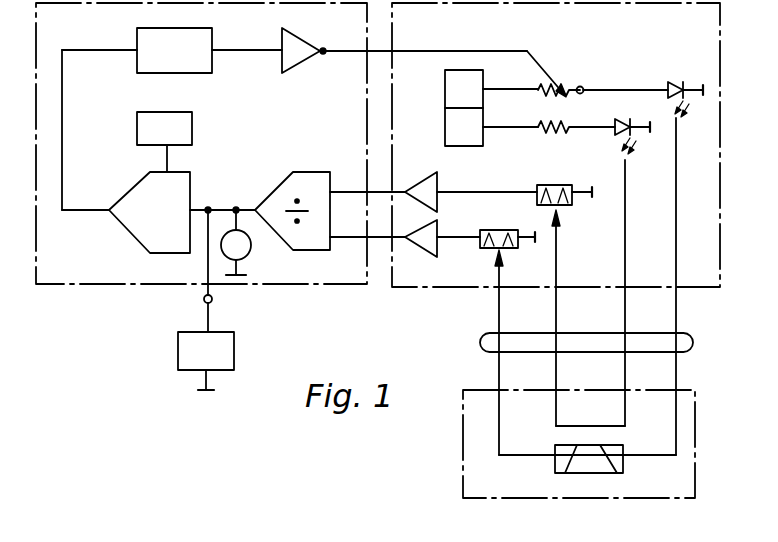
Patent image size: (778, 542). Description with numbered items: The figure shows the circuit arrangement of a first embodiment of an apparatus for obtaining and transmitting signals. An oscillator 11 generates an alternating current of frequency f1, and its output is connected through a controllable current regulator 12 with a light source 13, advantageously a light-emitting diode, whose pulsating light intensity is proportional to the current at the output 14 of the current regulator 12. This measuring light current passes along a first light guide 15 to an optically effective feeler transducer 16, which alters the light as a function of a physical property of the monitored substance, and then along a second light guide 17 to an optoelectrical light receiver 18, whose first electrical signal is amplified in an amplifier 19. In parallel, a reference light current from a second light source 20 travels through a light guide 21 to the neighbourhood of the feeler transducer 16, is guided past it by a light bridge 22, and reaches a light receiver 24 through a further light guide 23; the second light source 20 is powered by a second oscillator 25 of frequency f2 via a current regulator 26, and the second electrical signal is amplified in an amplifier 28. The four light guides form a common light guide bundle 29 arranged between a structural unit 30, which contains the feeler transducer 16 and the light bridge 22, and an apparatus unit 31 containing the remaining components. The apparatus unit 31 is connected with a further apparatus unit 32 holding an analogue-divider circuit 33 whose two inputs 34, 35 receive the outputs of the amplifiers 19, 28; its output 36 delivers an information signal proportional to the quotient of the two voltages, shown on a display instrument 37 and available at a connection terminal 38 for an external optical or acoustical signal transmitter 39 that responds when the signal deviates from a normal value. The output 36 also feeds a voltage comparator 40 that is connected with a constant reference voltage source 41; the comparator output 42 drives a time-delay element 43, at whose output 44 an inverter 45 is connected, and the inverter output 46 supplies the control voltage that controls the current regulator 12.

The oscillator 11 is at (445, 91).
The controllable current regulator 12 is at (563, 80).
The light source 13 is at (676, 80).
The output of the current regulator 14 is at (584, 88).
The first light guide 15 is at (678, 315).
The feeler transducer 16 is at (623, 468).
The second light guide 17 is at (497, 310).
The light receiver 18 is at (500, 229).
The amplifier 19 is at (425, 245).
The second light source 20 is at (613, 133).
The light guide 21 is at (627, 315).
The light bridge 22 is at (590, 426).
The further light guide 23 is at (558, 315).
The light receiver 24 is at (556, 184).
The second oscillator 25 is at (445, 130).
The current regulator 26 is at (540, 122).
The amplifier 28 is at (438, 183).
The light guide bundle 29 is at (695, 344).
The structural unit 30 is at (697, 445).
The apparatus unit 31 is at (720, 180).
The further apparatus unit 32 is at (80, 284).
The analogue-divider circuit 33 is at (312, 172).
The input of the divider circuit 34 is at (333, 239).
The input of the divider circuit 35 is at (333, 192).
The output of the divider circuit 36 is at (255, 210).
The display instrument 37 is at (250, 252).
The connection terminal 38 is at (204, 299).
The signal transmitter 39 is at (234, 345).
The voltage comparator 40 is at (143, 234).
The constant reference voltage source 41 is at (193, 128).
The output of the comparator 42 is at (109, 210).
The time-delay element 43 is at (150, 74).
The output of the time-delay element 44 is at (216, 48).
The inverter 45 is at (293, 62).
The output of the inverter 46 is at (325, 48).